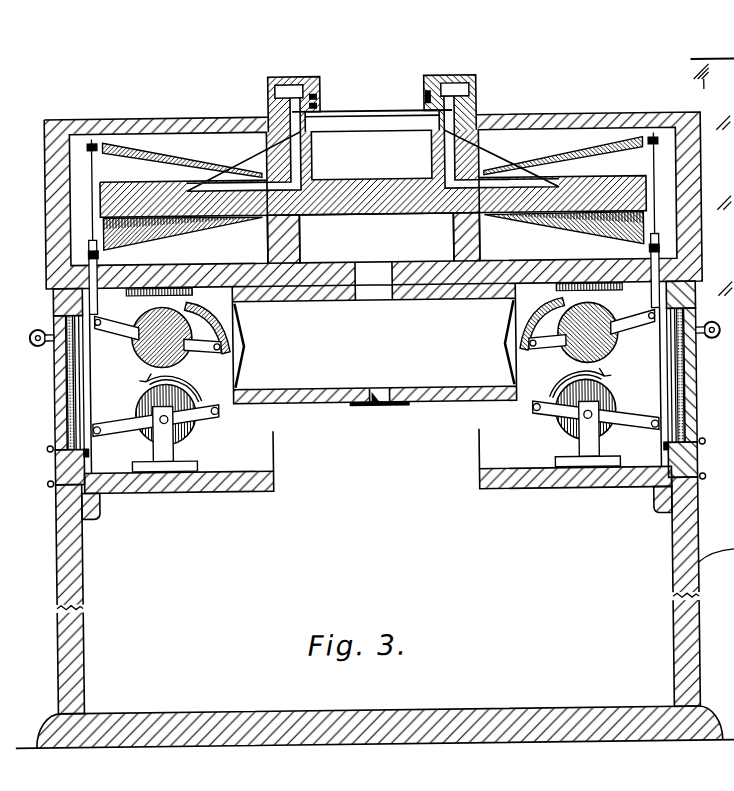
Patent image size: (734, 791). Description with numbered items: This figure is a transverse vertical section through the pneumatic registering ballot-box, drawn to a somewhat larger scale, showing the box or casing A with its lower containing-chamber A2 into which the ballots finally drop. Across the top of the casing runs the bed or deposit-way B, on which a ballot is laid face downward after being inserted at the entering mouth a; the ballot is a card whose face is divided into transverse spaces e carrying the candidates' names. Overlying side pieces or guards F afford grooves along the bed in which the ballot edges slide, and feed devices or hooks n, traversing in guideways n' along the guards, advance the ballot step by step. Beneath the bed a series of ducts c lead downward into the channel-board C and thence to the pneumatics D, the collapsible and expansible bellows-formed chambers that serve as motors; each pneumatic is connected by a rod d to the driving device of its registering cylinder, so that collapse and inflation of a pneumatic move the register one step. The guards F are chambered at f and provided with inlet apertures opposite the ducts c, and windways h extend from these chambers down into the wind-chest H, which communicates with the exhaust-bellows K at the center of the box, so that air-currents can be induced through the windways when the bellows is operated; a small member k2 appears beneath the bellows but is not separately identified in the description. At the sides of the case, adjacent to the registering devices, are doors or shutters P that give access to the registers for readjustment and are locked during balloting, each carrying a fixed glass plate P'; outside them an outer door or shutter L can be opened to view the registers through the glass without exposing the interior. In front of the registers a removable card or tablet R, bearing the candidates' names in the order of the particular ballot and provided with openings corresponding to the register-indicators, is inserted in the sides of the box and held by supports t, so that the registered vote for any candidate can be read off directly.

The box or casing A is at (50, 232).
The containing-chamber A2 is at (376, 487).
The bed or deposit-way B is at (372, 105).
The channel-board C is at (372, 173).
The ducts c is at (312, 144).
The pneumatics D is at (372, 194).
The rods d is at (372, 302).
The overlying side pieces or guards F is at (371, 92).
The chambers f is at (492, 83).
The wind-chest H is at (376, 238).
The windways h is at (283, 222).
The exhaust-bellows K is at (374, 343).
The plate k2 is at (380, 413).
The outer door or shutter L is at (56, 352).
The doors or shutters P is at (365, 383).
The glass plate P' is at (367, 379).
The removable card or tablet R is at (75, 396).
The entering mouth a is at (375, 419).
The transverse spaces e is at (374, 326).
The feed devices or hooks n is at (322, 101).
The guideways n' is at (323, 85).
The supports t is at (376, 452).